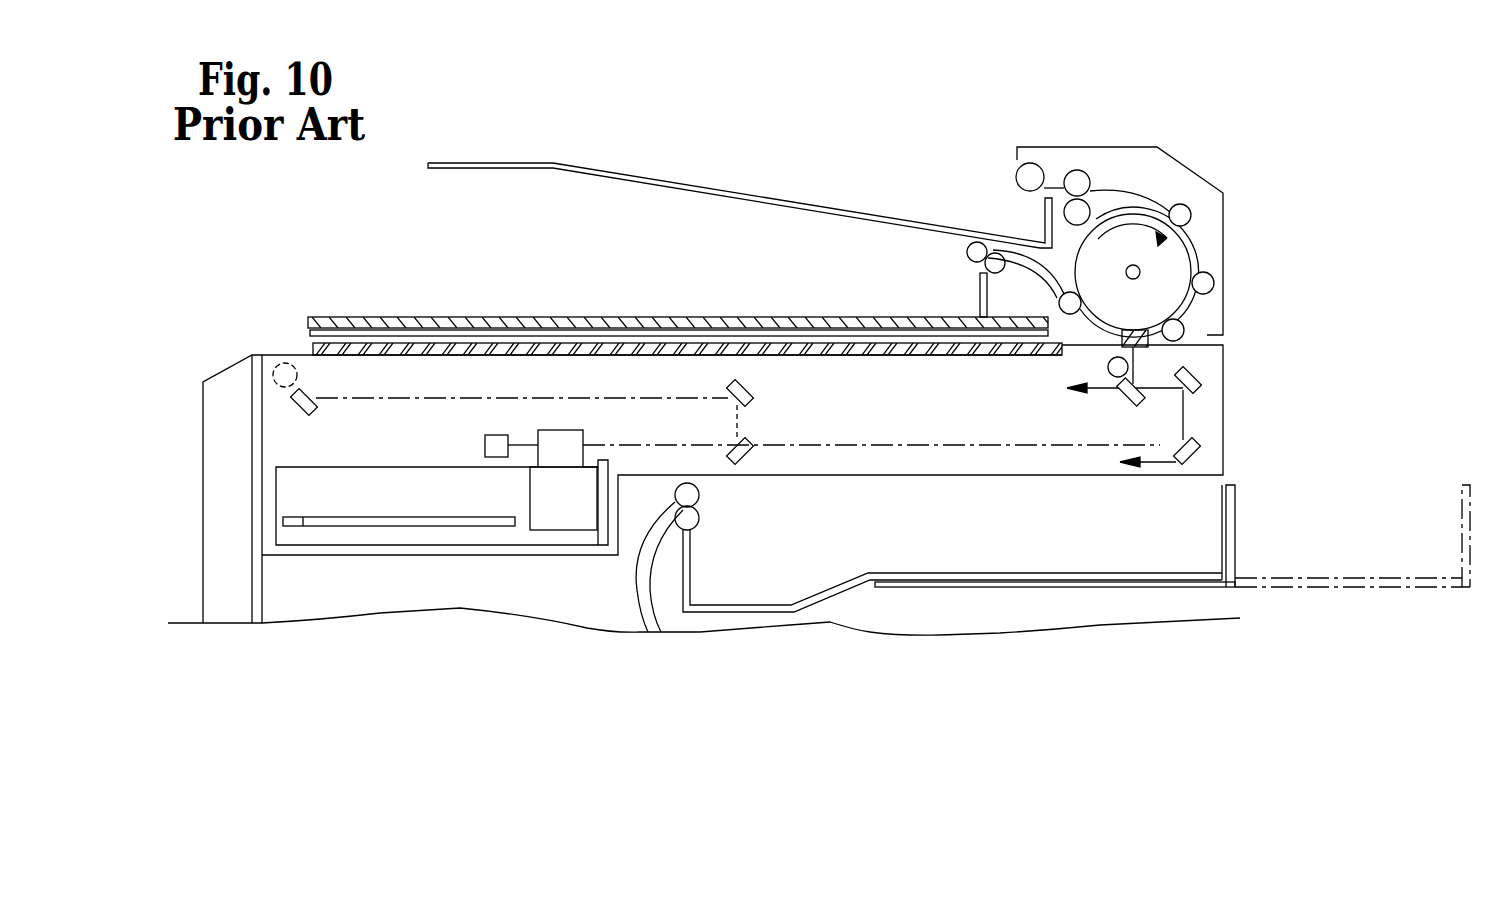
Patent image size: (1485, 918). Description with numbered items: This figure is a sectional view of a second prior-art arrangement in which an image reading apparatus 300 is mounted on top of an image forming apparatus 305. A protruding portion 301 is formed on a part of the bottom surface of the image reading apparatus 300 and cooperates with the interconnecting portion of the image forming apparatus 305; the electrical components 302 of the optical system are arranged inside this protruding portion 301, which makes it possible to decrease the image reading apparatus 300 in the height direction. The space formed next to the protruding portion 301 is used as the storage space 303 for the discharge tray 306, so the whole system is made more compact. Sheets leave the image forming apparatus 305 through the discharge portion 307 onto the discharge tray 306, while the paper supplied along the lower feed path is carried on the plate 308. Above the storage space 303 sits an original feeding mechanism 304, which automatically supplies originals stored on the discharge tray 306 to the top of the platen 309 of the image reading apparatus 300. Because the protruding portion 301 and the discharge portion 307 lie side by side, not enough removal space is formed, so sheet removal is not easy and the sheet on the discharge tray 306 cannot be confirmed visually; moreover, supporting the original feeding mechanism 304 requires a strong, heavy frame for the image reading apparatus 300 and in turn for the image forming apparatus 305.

The image reading apparatus 300 is at (1223, 402).
The protruding portion 301 is at (267, 523).
The electrical components 302 is at (553, 513).
The storage space 303 is at (767, 532).
The original feeding mechanism 304 is at (1152, 190).
The image forming apparatus 305 is at (327, 593).
The discharge tray 306 is at (1155, 570).
The discharge portion 307 is at (658, 575).
The paper feed plate 308 is at (980, 587).
The platen 309 is at (495, 347).